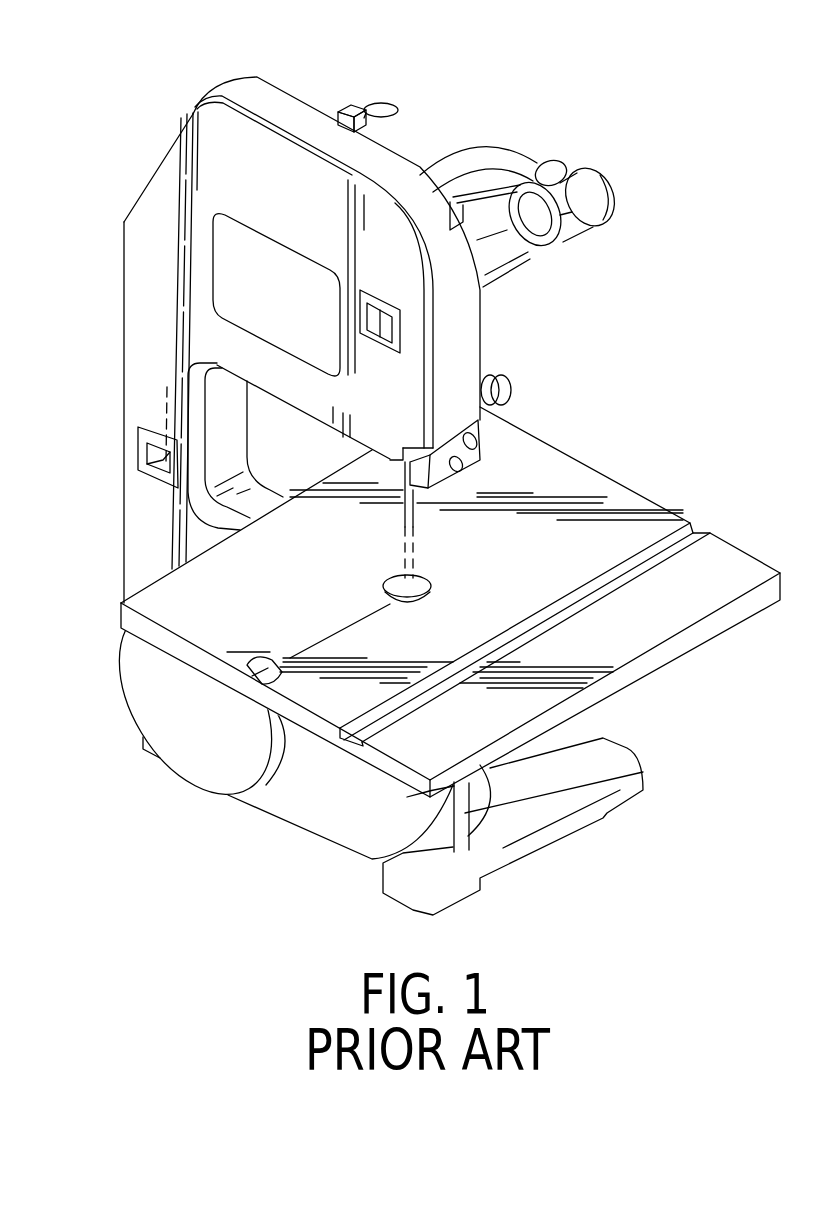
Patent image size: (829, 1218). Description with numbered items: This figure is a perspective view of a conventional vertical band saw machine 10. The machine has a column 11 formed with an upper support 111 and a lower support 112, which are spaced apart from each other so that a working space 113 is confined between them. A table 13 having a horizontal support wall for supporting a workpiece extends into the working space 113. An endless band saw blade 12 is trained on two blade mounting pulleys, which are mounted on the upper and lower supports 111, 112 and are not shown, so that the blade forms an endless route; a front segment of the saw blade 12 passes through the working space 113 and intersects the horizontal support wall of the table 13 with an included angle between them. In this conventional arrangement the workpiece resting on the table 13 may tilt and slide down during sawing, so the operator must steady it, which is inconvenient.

The vertical band saw machine 10 is at (409, 463).
The column 11 is at (365, 463).
The upper support 111 is at (313, 190).
The lower support 112 is at (360, 817).
The working space 113 is at (287, 443).
The endless band saw blade 12 is at (483, 487).
The table 13 is at (611, 535).